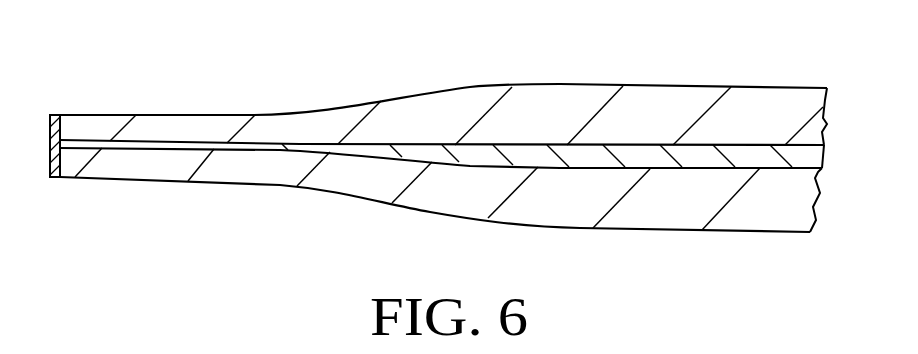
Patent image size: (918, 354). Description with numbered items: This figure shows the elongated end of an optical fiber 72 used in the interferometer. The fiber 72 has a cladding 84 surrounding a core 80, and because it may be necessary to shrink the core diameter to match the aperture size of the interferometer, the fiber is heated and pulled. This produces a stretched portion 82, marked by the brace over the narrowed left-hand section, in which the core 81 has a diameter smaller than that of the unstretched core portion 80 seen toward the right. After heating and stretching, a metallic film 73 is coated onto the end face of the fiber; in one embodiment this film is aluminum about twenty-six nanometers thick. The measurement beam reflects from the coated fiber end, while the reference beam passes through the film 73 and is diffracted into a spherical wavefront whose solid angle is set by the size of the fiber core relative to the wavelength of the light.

The fiber 72 is at (580, 85).
The metallic film 73 is at (50, 163).
The core 80 is at (460, 152).
The core 81 is at (180, 145).
The stretched portion 82 is at (58, 87).
The cladding 84 is at (638, 207).